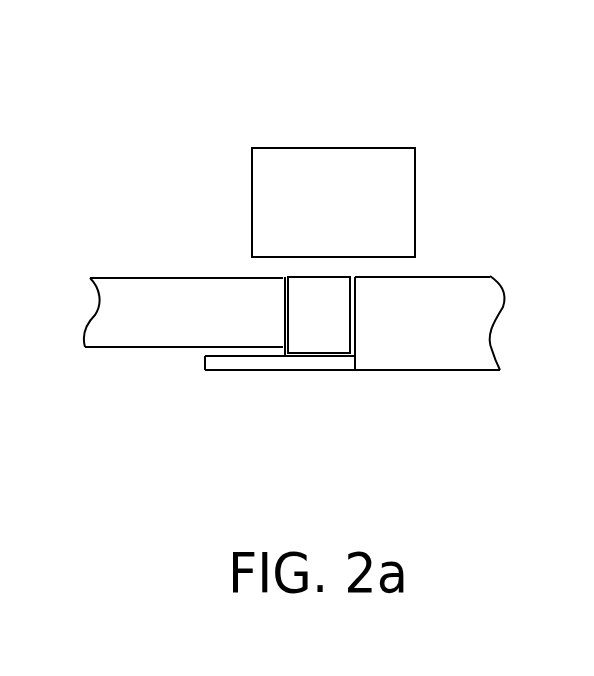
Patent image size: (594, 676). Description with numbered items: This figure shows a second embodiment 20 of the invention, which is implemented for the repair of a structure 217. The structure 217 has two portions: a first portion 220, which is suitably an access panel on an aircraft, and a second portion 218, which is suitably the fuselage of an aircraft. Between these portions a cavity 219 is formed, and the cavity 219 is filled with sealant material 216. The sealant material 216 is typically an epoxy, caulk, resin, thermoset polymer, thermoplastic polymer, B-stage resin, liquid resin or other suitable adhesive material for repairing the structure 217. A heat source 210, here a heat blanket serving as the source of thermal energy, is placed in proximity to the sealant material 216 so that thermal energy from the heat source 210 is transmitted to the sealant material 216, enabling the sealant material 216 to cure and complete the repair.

The second embodiment 20 is at (160, 81).
The heat source 210 is at (355, 157).
The sealant material 216 is at (324, 357).
The structure 217 is at (250, 443).
The second portion 218 is at (447, 348).
The cavity 219 is at (303, 302).
The first portion 220 is at (176, 332).